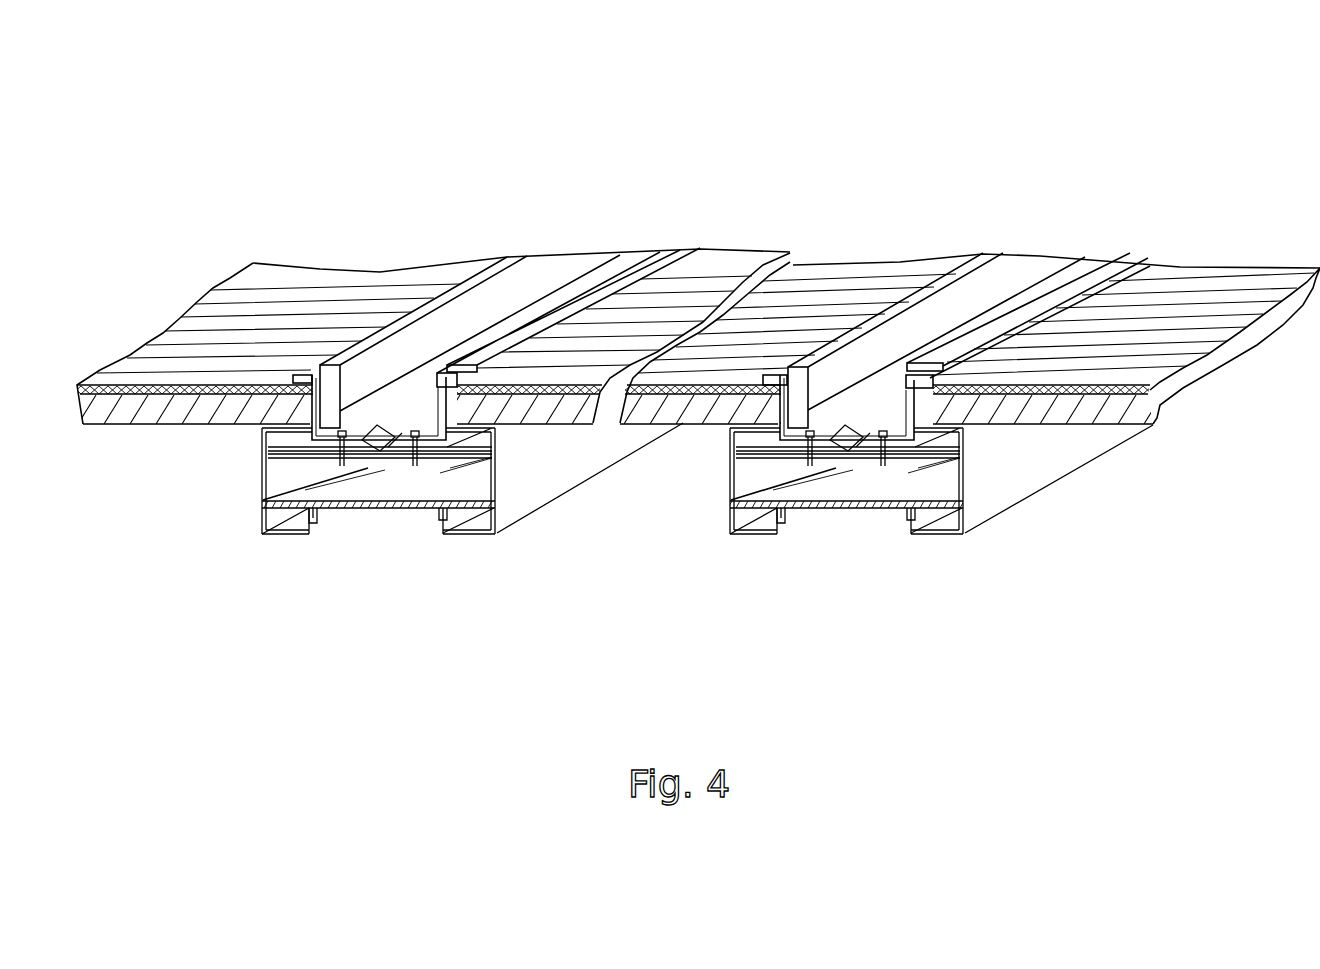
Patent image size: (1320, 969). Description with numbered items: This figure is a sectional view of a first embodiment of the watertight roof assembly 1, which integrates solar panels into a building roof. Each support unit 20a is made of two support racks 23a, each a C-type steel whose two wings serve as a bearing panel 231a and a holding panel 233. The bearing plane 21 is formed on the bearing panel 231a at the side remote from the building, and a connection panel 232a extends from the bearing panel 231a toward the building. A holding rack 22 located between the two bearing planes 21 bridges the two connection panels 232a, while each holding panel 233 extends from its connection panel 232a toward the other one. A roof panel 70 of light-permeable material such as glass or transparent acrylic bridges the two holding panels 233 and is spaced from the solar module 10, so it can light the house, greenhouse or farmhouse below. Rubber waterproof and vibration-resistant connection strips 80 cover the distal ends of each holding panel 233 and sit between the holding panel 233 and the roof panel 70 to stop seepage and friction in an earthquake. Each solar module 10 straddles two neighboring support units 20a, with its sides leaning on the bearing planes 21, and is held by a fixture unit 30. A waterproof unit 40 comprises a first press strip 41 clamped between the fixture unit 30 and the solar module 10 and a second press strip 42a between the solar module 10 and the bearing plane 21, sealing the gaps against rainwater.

The watertight roof assembly 1 is at (491, 165).
The solar module 10 is at (377, 268).
The fixture unit 30 is at (308, 360).
The waterproof unit 40 is at (1003, 167).
The first press strip 41 is at (781, 372).
The second press strip 42a is at (909, 359).
The support unit 20a is at (720, 528).
The bearing plane 21 is at (497, 427).
The holding rack 22 is at (304, 456).
The support rack 23a is at (511, 542).
The roof panel 70 is at (376, 508).
The waterproof and vibration-resistant connection strip 80 is at (437, 518).
The bearing panel 231a is at (268, 429).
The connection panel 232a is at (263, 478).
The holding panel 233 is at (320, 527).